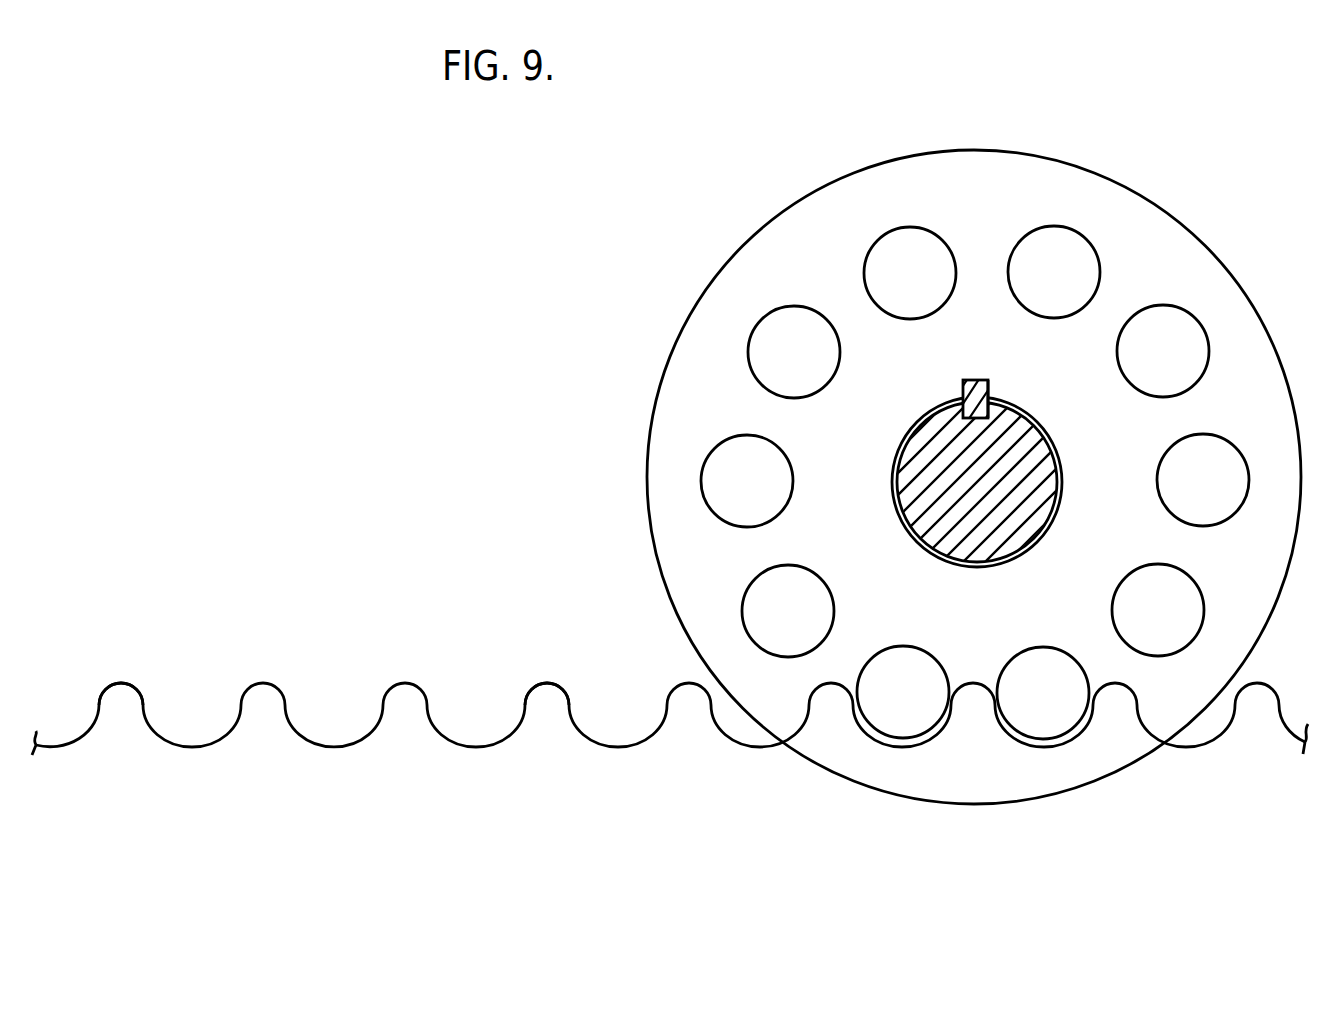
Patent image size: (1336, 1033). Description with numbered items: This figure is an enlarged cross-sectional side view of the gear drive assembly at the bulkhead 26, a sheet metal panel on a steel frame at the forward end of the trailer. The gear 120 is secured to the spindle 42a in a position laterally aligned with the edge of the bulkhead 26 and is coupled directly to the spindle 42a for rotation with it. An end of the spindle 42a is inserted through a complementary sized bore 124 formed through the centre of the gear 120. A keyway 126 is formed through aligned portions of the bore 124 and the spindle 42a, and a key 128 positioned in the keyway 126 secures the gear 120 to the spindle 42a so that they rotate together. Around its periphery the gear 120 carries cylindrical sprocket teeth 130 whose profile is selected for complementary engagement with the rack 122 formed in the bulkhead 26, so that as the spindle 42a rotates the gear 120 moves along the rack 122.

The front bulkhead 26 is at (494, 832).
The rack 122 is at (203, 742).
The gear 120 is at (1177, 212).
The cylindrical sprocket teeth 130 is at (1025, 248).
The bore 124 is at (1056, 440).
The spindle 42a is at (1001, 511).
The key 128 is at (973, 382).
The keyway 126 is at (989, 383).